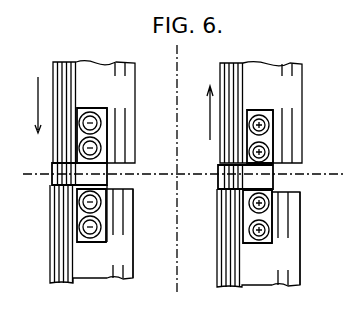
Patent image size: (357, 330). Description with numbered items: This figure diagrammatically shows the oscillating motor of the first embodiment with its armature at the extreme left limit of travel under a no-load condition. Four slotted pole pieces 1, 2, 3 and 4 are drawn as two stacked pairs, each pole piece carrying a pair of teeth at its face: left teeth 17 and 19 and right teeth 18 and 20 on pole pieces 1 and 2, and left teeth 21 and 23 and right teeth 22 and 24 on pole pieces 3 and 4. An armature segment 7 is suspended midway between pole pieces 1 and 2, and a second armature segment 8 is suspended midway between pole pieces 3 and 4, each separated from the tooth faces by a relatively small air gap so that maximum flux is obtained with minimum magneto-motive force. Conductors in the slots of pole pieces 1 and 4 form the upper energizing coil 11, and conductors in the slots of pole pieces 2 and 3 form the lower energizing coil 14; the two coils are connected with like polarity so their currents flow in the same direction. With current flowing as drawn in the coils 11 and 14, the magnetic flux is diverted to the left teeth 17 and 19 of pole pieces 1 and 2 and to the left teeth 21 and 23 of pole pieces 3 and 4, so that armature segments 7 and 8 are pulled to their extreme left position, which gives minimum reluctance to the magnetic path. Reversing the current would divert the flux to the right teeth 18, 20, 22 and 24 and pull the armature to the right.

The slotted pole piece 1 is at (99, 103).
The slotted pole piece 2 is at (90, 245).
The slotted pole piece 3 is at (262, 249).
The slotted pole piece 4 is at (264, 104).
The armature segment 7 is at (52, 178).
The armature segment 8 is at (220, 182).
The upper energizing coil 11 is at (103, 135).
The lower energizing coil 14 is at (103, 212).
The pole tooth 17 is at (55, 157).
The pole tooth 18 is at (135, 148).
The pole tooth 19 is at (50, 210).
The pole tooth 20 is at (133, 209).
The pole tooth 21 is at (222, 208).
The pole tooth 22 is at (298, 216).
The pole tooth 23 is at (222, 148).
The pole tooth 24 is at (302, 147).